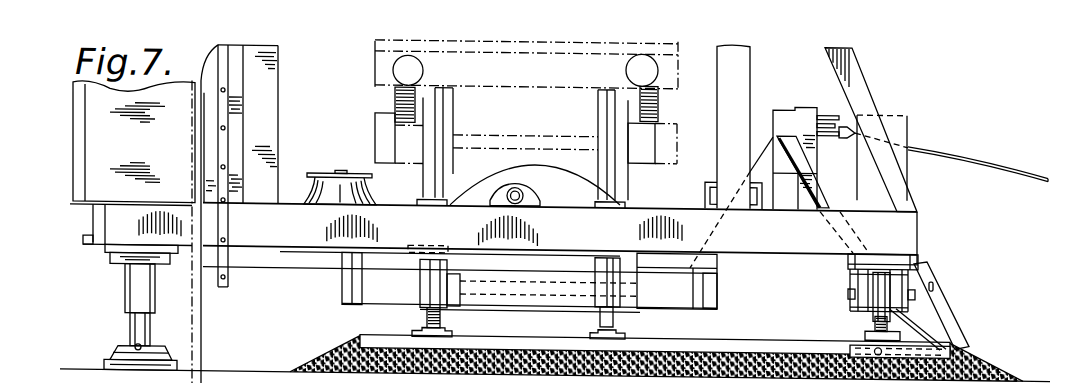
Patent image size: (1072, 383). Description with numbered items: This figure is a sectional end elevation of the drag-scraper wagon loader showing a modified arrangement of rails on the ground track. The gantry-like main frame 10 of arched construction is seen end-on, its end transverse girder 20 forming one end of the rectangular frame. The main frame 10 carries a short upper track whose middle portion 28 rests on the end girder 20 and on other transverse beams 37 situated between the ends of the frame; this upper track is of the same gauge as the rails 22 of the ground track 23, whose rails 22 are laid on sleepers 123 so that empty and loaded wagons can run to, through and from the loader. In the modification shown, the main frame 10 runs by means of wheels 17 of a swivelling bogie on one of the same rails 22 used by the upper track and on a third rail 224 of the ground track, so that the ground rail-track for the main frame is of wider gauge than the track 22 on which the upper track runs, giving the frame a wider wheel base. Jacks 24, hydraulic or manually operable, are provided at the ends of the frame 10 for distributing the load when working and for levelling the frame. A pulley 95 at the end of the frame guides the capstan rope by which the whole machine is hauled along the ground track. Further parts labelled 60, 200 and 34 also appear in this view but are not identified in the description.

The main frame 10 is at (101, 248).
The jacks 24 is at (125, 311).
The end transverse girder 20 is at (247, 267).
The pulley 95 is at (322, 169).
The overhead beam 60 is at (527, 82).
The middle portion of upper track 28 is at (535, 181).
The transverse beams 37 is at (557, 199).
The clamp block 200 is at (420, 307).
The slide box 34 is at (634, 272).
The ground track 23 is at (343, 336).
The rails 22 is at (610, 322).
The sleepers 123 is at (712, 329).
The wheels 17 is at (876, 303).
The third rail 224 is at (873, 317).